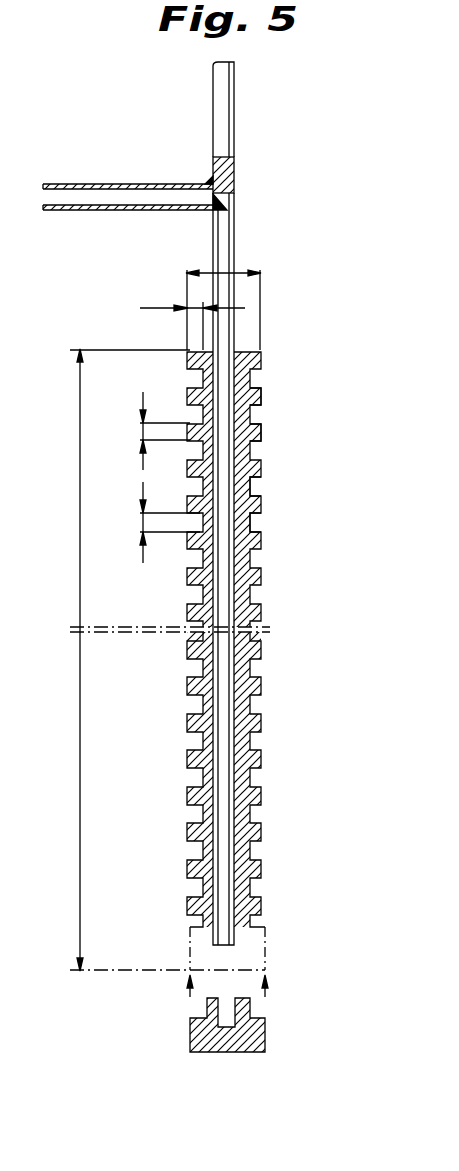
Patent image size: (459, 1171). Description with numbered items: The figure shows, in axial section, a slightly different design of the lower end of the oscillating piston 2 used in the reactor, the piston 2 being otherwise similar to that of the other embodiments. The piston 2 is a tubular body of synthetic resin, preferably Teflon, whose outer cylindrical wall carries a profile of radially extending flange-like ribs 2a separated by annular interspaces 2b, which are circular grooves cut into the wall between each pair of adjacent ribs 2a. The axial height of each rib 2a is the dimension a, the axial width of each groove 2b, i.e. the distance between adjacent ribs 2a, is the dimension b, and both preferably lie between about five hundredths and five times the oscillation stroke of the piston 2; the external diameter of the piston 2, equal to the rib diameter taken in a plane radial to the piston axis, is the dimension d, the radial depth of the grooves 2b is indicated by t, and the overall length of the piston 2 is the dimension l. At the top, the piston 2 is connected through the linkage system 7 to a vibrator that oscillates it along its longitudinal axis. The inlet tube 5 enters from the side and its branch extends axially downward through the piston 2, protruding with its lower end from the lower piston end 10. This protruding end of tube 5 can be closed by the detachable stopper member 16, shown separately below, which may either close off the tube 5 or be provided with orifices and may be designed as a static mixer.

The piston 2 is at (261, 578).
The flange-like ribs 2a is at (258, 430).
The annular interspaces 2b is at (258, 522).
The inlet tube 5 is at (222, 237).
The linkage system 7 is at (220, 105).
The lower piston end 10 is at (265, 952).
The stopper member 16 is at (258, 1036).
The rib height a is at (142, 430).
The distance between adjacent ribs b is at (142, 521).
The piston diameter d is at (224, 273).
The fin height t is at (198, 308).
The piston length l is at (81, 720).